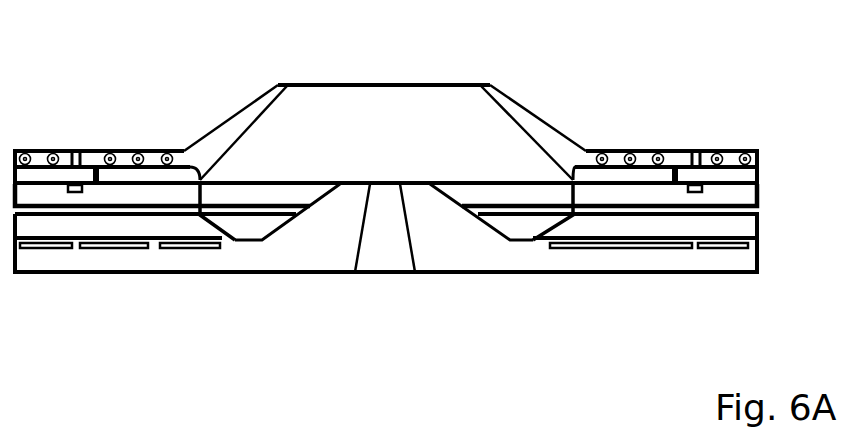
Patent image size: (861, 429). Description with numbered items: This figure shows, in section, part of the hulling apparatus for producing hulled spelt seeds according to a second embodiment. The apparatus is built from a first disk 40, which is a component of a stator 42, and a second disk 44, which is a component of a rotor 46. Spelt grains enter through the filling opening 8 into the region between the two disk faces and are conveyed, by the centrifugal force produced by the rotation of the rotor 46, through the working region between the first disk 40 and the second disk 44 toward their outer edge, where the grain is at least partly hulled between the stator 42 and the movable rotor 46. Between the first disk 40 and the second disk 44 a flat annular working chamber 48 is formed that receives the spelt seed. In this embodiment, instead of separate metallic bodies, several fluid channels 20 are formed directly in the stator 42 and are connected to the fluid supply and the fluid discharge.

The filling opening 8 is at (381, 122).
The fluid channels 20 is at (50, 151).
The first disk 40 is at (723, 198).
The stator 42 is at (735, 151).
The second disk 44 is at (723, 228).
The rotor 46 is at (723, 260).
The annular working chamber 48 is at (648, 210).